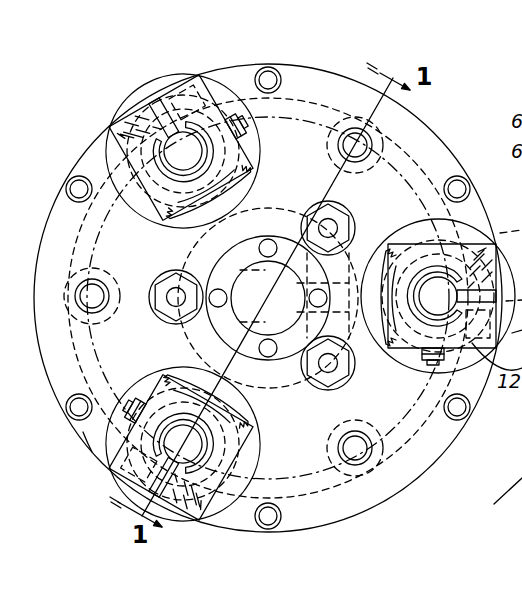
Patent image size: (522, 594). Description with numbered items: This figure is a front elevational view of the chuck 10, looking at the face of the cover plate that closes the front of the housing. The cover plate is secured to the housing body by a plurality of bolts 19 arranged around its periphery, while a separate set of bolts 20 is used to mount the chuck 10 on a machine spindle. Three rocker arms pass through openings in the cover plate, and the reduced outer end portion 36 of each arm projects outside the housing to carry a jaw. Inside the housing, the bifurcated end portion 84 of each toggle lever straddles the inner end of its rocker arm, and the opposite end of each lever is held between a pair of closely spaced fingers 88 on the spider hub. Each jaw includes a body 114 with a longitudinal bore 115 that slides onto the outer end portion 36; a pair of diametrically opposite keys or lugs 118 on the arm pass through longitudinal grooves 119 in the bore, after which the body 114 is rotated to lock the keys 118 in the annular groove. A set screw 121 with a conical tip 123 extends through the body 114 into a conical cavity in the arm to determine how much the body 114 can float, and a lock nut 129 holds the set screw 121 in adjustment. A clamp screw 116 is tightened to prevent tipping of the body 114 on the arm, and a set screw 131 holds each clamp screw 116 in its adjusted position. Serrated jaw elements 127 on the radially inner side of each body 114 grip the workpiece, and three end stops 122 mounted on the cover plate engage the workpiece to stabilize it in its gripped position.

The chuck 10 is at (354, 0).
The bolts 19 is at (68, 186).
The bolts 20 is at (96, 282).
The outer end portion 36 is at (185, 138).
The bifurcated end portion 84 is at (298, 274).
The fingers 88 is at (187, 250).
The body 114 is at (199, 514).
The longitudinal bore 115 is at (197, 424).
The clamp screw 116 is at (90, 452).
The keys or lugs 118 is at (432, 288).
The longitudinal grooves 119 is at (62, 436).
The set screw 121 is at (53, 414).
The end stops 122 is at (348, 220).
The conical tip 123 is at (270, 134).
The serrated jaw elements 127 is at (262, 412).
The lock nut 129 is at (233, 112).
The set screw 131 is at (97, 128).